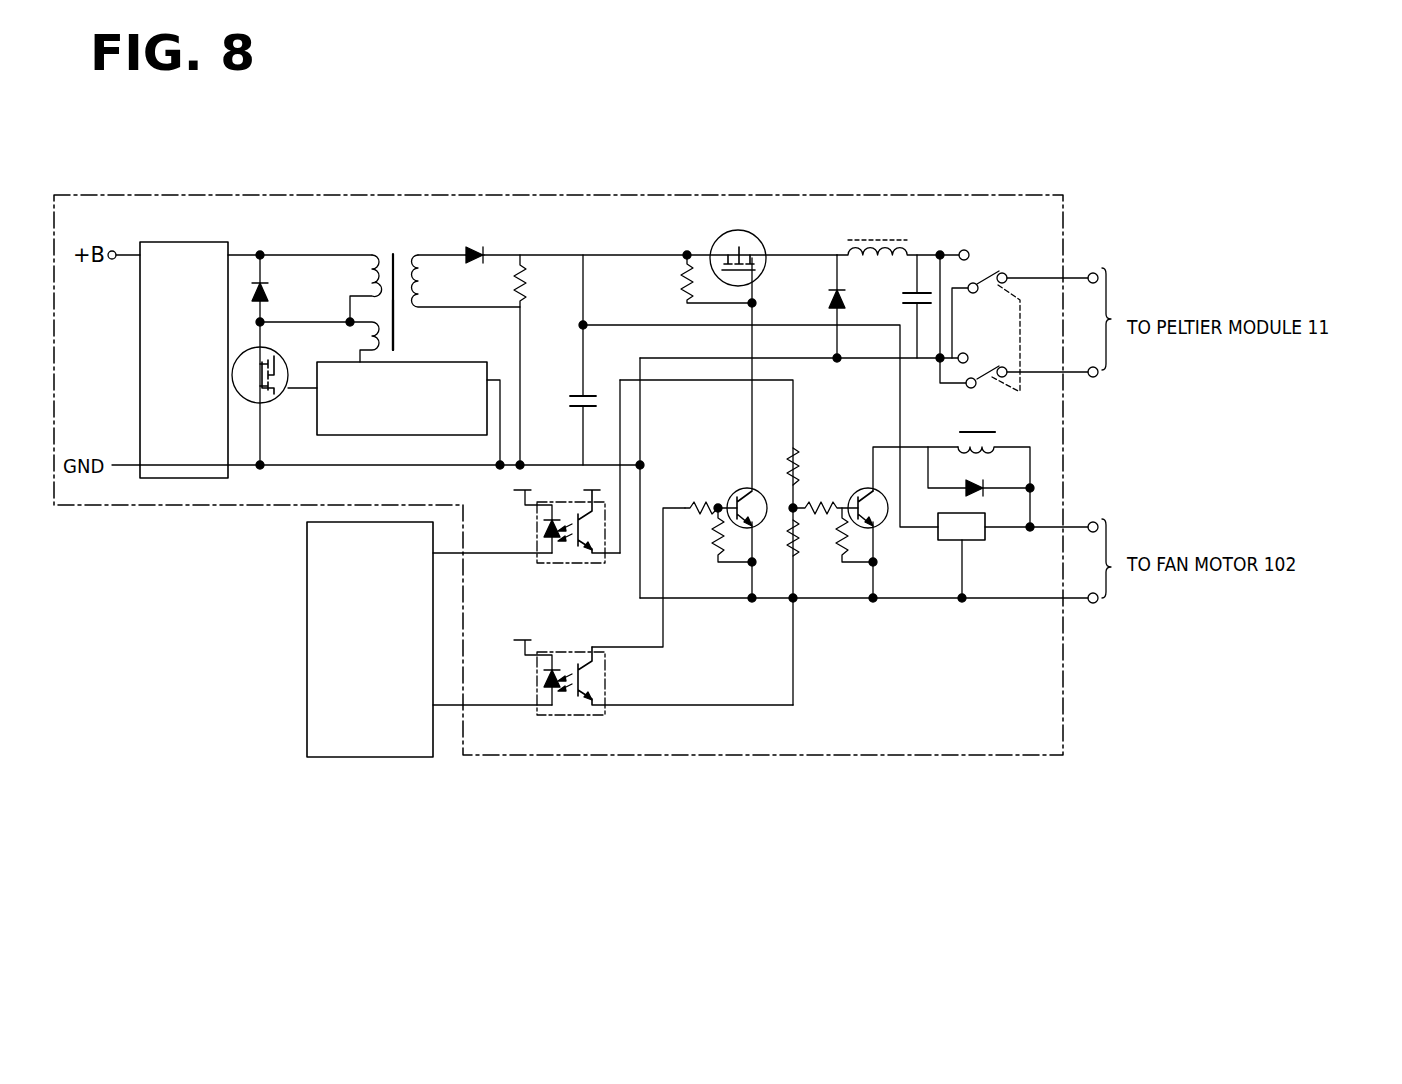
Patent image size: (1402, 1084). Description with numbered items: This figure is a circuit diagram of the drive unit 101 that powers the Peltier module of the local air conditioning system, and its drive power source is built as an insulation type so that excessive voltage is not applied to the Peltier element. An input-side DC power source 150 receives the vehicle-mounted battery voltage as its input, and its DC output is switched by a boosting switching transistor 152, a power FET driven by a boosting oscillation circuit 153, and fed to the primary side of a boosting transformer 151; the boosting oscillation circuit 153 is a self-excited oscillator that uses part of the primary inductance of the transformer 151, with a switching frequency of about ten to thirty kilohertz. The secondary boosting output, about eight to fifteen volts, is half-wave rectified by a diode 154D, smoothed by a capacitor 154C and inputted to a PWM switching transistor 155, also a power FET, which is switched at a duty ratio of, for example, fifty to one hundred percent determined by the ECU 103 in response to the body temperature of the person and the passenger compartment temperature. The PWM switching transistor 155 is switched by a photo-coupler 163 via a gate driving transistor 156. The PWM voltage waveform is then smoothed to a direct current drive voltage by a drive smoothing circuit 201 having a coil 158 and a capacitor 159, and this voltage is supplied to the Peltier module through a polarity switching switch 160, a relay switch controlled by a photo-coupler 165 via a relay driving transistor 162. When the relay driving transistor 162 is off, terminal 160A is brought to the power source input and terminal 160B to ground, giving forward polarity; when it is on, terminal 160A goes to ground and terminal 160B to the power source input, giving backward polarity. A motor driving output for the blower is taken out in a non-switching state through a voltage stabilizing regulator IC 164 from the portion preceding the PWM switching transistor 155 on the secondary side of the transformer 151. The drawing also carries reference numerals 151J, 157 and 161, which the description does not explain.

The drive unit 101 is at (908, 201).
The ECU 103 is at (366, 758).
The input-side DC power source 150 is at (200, 243).
The boosting transformer 151 is at (381, 243).
The transformer core 151J is at (395, 352).
The boosting switching transistor 152 is at (288, 356).
The boosting oscillation circuit 153 is at (404, 437).
The capacitor 154C is at (577, 392).
The diode 154D is at (474, 249).
The PWM switching transistor 155 is at (767, 245).
The gate driving transistor 156 is at (713, 480).
The diode 157 is at (833, 292).
The coil 158 is at (887, 241).
The capacitor 159 is at (912, 298).
The polarity switching switch 160 is at (980, 254).
The terminal 160A is at (1094, 271).
The terminal 160B is at (1094, 379).
The relay coil 161 is at (973, 430).
The relay driving transistor 162 is at (842, 487).
The photo-coupler 163 is at (568, 566).
The voltage stabilizing regulator IC 164 is at (972, 543).
The photo-coupler 165 is at (568, 720).
The drive smoothing circuit 201 is at (862, 232).